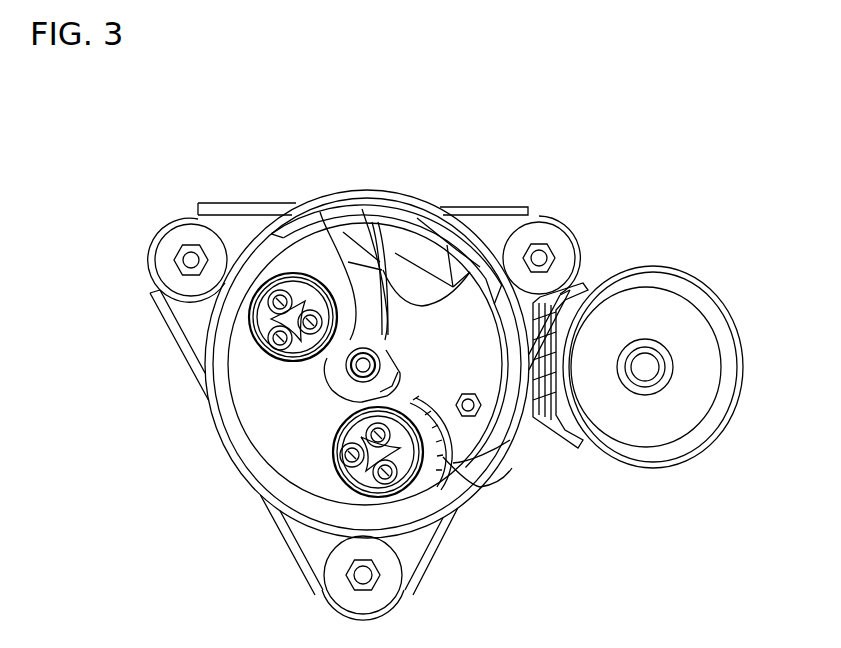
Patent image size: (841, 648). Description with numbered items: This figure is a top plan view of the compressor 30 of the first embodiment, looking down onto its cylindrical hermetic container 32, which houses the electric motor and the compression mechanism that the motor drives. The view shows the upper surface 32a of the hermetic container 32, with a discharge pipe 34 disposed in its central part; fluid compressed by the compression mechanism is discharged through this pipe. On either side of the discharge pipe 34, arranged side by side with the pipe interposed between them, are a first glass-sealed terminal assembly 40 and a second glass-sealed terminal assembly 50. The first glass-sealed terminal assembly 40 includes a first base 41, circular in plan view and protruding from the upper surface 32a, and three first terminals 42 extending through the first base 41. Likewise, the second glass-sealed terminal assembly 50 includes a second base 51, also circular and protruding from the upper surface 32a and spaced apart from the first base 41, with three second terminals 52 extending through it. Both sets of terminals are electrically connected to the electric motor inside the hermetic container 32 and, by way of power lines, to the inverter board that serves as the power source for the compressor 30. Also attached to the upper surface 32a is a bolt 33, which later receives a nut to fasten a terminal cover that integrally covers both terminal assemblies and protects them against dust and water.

The compressor 30 is at (226, 170).
The hermetic container 32 is at (207, 435).
The upper surface 32a is at (233, 392).
The bolt 33 is at (473, 408).
The discharge pipe 34 is at (372, 352).
The first glass-sealed terminal assembly 40 is at (320, 469).
The first base 41 is at (253, 488).
The first terminals 42 is at (366, 428).
The second glass-sealed terminal assembly 50 is at (230, 312).
The second base 51 is at (198, 355).
The second terminals 52 is at (286, 288).